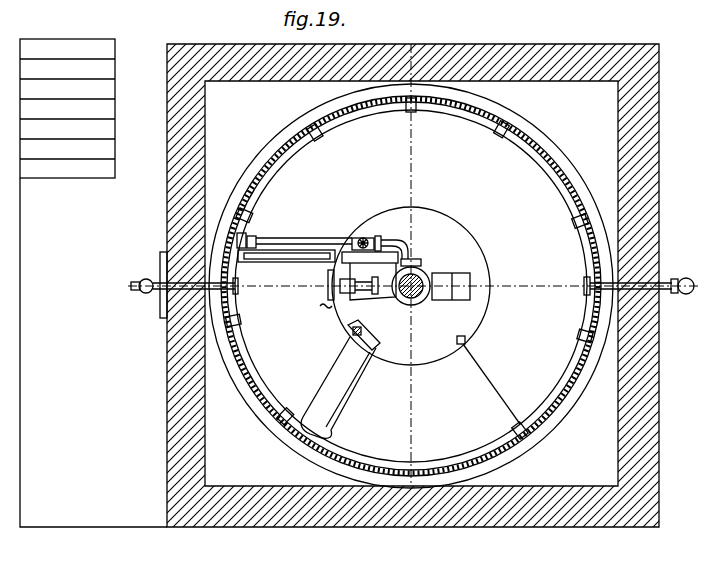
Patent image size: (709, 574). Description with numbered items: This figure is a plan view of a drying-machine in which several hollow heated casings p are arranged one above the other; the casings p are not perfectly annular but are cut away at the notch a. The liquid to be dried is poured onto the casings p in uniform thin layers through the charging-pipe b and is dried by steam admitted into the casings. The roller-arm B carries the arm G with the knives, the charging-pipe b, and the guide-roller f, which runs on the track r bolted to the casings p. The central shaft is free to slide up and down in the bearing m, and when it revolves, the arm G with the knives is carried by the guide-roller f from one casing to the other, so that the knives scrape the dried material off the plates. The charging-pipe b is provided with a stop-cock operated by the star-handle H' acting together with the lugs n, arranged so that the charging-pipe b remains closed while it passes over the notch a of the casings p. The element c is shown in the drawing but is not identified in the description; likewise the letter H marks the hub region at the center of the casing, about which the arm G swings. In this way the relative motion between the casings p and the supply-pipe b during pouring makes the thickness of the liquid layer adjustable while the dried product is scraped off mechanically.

The casing p is at (411, 286).
The track r is at (410, 280).
The notch a is at (470, 384).
The lug n is at (461, 332).
The bearing m is at (425, 356).
The swinging arm c is at (340, 379).
The hub H is at (431, 282).
The arm G is at (370, 257).
The roller-arm B is at (368, 281).
The guide-roller f is at (323, 289).
The star-handle H' is at (380, 240).
The charging-pipe b is at (294, 243).